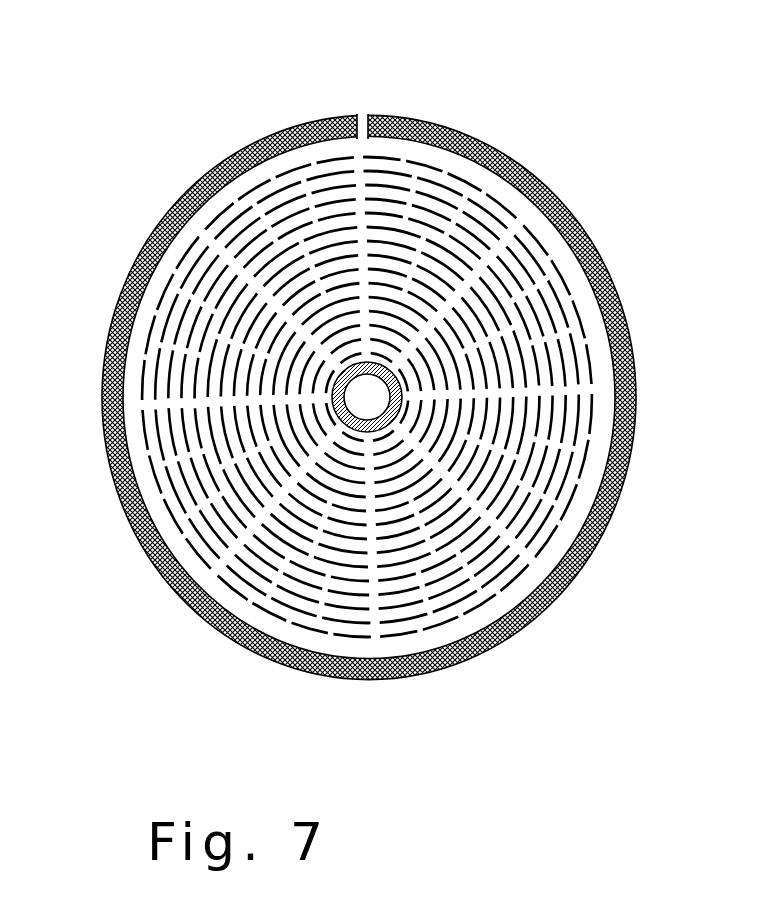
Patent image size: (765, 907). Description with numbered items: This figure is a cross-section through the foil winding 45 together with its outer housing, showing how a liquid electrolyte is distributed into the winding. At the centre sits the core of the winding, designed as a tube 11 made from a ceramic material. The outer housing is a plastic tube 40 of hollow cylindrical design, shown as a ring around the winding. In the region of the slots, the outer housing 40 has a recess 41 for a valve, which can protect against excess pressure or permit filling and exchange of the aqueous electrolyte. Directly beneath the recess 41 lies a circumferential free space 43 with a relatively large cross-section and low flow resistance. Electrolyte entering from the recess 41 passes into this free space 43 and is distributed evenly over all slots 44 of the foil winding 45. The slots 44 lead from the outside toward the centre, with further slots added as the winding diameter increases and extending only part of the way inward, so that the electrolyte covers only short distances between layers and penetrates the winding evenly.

The plastic tube 40 is at (101, 433).
The recess 41 is at (372, 105).
The circumferential free space 43 is at (585, 200).
The slots 44 is at (580, 383).
The tube 11 is at (399, 408).
The foil winding 45 is at (572, 617).